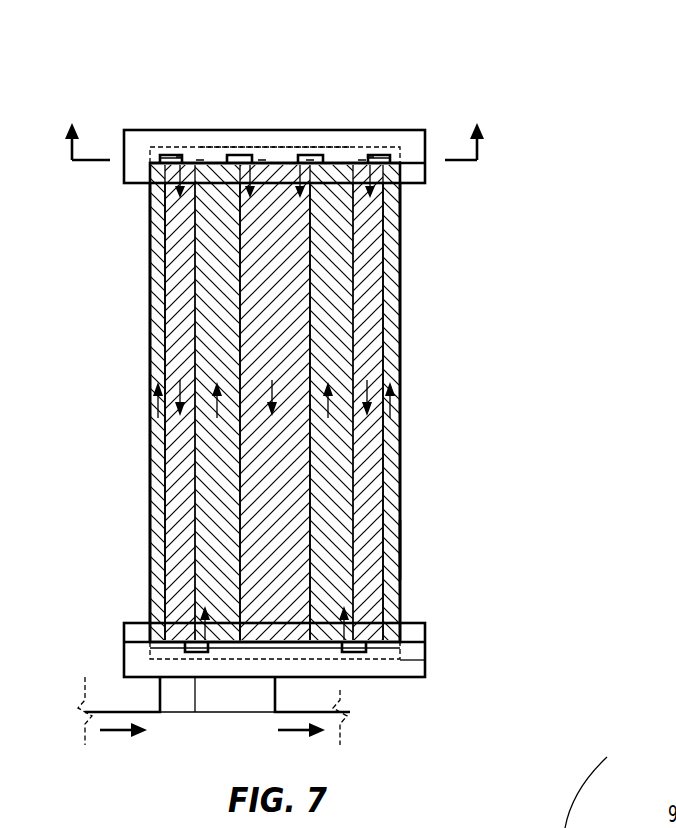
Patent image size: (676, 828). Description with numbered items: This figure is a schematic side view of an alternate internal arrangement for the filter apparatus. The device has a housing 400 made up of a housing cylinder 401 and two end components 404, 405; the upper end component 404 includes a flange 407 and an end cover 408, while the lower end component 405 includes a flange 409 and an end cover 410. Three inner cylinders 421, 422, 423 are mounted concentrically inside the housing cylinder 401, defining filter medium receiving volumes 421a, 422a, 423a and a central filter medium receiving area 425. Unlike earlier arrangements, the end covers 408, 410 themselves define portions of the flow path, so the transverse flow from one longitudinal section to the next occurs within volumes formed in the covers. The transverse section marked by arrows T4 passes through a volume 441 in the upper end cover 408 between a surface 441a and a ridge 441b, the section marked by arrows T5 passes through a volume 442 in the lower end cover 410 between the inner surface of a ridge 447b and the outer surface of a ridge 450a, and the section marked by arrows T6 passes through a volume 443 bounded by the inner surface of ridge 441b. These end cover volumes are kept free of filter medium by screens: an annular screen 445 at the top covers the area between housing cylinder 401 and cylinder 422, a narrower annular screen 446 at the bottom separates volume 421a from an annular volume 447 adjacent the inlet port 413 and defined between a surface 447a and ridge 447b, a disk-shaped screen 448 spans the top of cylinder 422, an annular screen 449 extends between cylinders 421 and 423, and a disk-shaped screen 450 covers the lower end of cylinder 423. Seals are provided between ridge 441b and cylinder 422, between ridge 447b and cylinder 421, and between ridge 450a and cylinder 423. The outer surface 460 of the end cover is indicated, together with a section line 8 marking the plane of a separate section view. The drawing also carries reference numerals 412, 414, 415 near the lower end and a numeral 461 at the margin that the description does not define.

The housing 400 is at (496, 290).
The housing cylinder 401 is at (152, 210).
The end component 404 is at (90, 74).
The end component 405 is at (90, 621).
The flange 407 is at (406, 186).
The end cover 408 is at (425, 140).
The flange 409 is at (425, 626).
The end cover 410 is at (420, 677).
The first inlet 412 is at (170, 714).
The inlet port 413 is at (206, 702).
The second inlet 414 is at (332, 714).
The second inlet duct 415 is at (268, 714).
The inner cylinder 421 is at (162, 240).
The filter medium receiving volume 421a is at (178, 268).
The inner cylinder 422 is at (162, 322).
The filter medium receiving volume 422a is at (182, 412).
The inner cylinder 423 is at (196, 440).
The filter medium receiving volume 423a is at (202, 456).
The filter medium receiving area 425 is at (290, 311).
The volume 441 is at (168, 156).
The surface 441a is at (152, 172).
The ridge 441b is at (178, 156).
The volume 442 is at (192, 660).
The volume 443 is at (222, 150).
The annular screen 445 is at (160, 156).
The annular screen 446 is at (166, 670).
The annular volume 447 is at (150, 660).
The surface 447a is at (150, 650).
The ridge 447b is at (190, 636).
The disk-shaped screen 448 is at (275, 146).
The annular screen 449 is at (279, 690).
The disk-shaped screen 450 is at (250, 655).
The ridge 450a is at (400, 550).
The outer surface 460 is at (140, 130).
The adjacent figure element 461 is at (601, 786).
The section line 8 is at (274, 125).
The transverse flow path arrows T4 is at (200, 160).
The transverse flow path arrows T5 is at (196, 660).
The transverse flow path arrows T6 is at (262, 160).